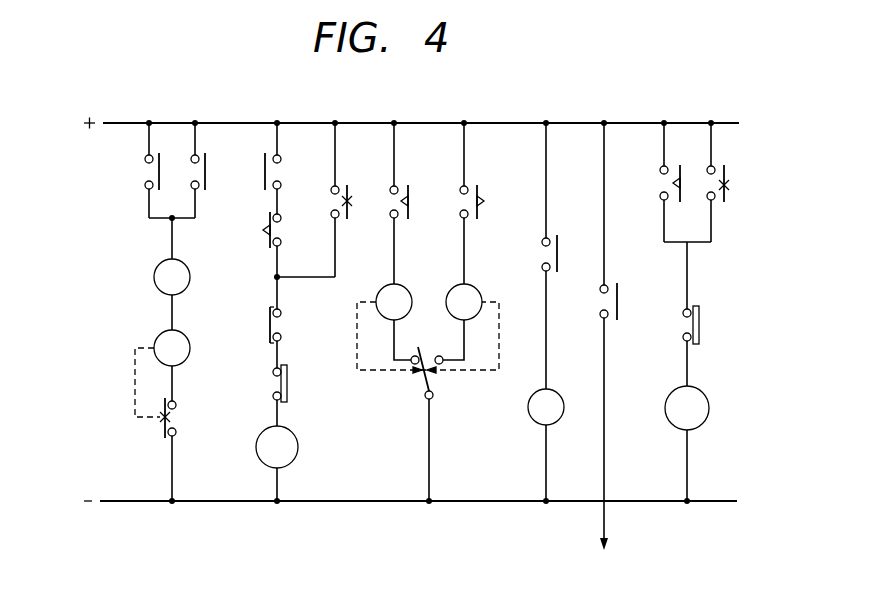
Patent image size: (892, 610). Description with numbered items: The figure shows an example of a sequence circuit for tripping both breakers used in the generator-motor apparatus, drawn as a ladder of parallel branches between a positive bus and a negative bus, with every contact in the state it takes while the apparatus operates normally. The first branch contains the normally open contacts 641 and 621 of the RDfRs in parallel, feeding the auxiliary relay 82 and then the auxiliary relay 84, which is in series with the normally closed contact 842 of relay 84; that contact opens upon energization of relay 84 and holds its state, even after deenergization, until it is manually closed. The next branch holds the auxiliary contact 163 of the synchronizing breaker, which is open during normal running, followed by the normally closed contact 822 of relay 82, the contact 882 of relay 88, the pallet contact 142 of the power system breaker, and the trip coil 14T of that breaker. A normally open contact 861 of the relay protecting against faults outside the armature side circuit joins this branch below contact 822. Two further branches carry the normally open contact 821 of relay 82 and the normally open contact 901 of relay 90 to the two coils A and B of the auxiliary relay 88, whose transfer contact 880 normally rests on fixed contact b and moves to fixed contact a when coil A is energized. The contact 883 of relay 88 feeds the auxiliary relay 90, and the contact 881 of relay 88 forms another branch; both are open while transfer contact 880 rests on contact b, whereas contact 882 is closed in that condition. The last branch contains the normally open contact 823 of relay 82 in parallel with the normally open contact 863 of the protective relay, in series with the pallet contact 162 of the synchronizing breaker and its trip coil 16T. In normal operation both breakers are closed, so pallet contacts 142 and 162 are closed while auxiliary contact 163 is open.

The normally open contact 641 is at (147, 174).
The normally open contact 621 is at (207, 178).
The auxiliary contact 163 is at (263, 167).
The auxiliary relay 82 is at (155, 270).
The auxiliary relay 84 is at (160, 330).
The normally closed contact 842 is at (166, 443).
The normally closed contact 822 is at (268, 243).
The contact 882 is at (269, 328).
The auxiliary contact 142 is at (288, 380).
The trip coil 14T is at (256, 442).
The normally open contact 861 is at (349, 192).
The normally open contact 821 is at (410, 192).
The normally open contact 901 is at (480, 190).
The auxiliary relay 88 is at (442, 277).
The transfer contact 880 is at (426, 380).
The contact 883 is at (557, 235).
The auxiliary relay 90 is at (532, 418).
The contact 881 is at (599, 303).
The normally open contact 823 is at (672, 186).
The normally open contact 863 is at (727, 196).
The auxiliary contact 162 is at (700, 322).
The trip coil 16T is at (709, 410).